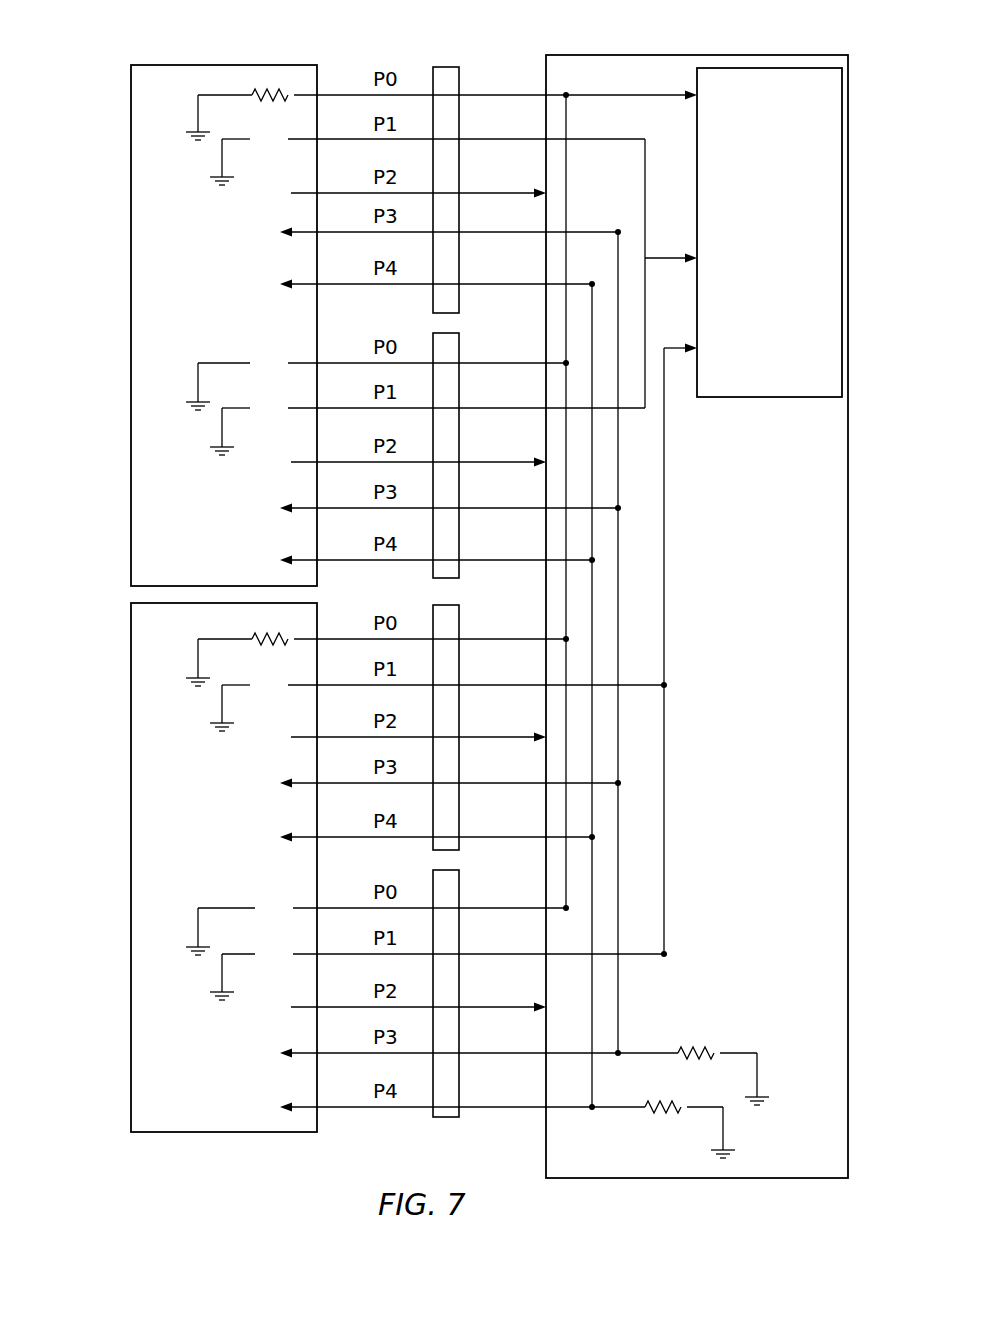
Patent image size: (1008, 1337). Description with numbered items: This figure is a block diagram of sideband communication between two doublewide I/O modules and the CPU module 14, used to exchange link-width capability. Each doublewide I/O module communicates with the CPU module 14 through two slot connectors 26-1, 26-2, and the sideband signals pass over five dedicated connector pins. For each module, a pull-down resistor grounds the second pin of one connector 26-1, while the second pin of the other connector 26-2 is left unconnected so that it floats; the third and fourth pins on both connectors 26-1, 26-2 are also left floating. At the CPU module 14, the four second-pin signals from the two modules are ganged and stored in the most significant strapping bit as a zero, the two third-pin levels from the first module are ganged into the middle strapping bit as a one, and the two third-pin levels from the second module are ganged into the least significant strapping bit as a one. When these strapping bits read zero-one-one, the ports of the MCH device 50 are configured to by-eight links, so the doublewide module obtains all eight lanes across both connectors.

The CPU module 14 is at (545, 55).
The MCH device 50 is at (760, 68).
The slot connector 26-1 is at (435, 67).
The slot connector 26-2 is at (447, 348).